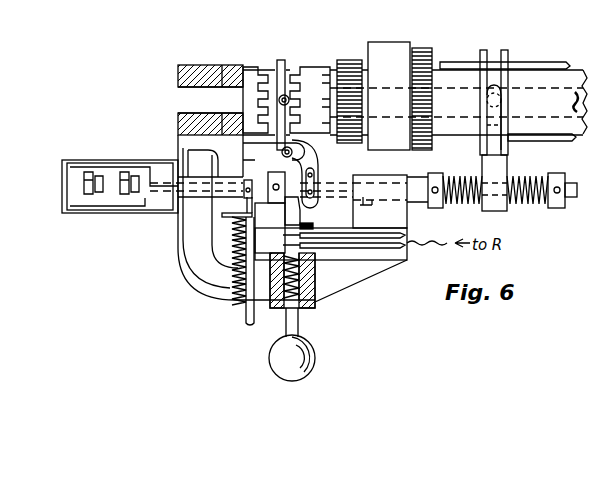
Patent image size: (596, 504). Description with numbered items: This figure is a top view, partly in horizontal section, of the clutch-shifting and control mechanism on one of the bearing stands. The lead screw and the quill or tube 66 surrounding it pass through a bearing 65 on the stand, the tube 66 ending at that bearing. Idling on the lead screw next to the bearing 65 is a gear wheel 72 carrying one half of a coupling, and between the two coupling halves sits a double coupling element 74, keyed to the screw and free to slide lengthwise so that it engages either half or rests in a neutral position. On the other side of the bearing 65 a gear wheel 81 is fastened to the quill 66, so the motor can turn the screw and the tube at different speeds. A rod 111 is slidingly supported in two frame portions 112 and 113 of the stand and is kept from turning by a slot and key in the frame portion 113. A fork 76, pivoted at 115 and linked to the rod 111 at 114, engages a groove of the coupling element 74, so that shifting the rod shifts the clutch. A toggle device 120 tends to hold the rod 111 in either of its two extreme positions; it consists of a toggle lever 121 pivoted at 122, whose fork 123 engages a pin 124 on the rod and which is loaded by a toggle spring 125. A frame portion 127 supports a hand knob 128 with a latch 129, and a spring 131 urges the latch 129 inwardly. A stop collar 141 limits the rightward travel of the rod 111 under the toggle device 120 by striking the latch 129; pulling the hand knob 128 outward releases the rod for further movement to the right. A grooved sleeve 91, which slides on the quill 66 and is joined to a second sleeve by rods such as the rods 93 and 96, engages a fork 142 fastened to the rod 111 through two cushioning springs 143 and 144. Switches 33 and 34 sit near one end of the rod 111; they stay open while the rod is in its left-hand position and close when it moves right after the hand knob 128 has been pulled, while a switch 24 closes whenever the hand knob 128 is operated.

The switch 24 is at (300, 245).
The switch 33 is at (95, 172).
The switch 34 is at (136, 172).
The bearing 65 is at (388, 50).
The quill or tube 66 is at (572, 86).
The gear wheel 72 is at (350, 60).
The double coupling element 74 is at (292, 68).
The fork 76 is at (312, 172).
The gear wheel 81 is at (425, 50).
The grooved sleeve 91 is at (496, 56).
The rod 93 is at (546, 62).
The rod 96 is at (558, 141).
The rod 111 is at (566, 186).
The frame portion 112 is at (186, 200).
The frame portion 113 is at (368, 205).
The link 114 is at (322, 182).
The pivot 115 is at (271, 111).
The toggle device 120 is at (200, 270).
The toggle lever 121 is at (240, 313).
The pivot 122 is at (230, 250).
The fork 123 is at (246, 196).
The pin 124 is at (252, 179).
The toggle spring 125 is at (225, 262).
The frame portion 127 is at (355, 272).
The hand knob 128 is at (312, 350).
The latch 129 is at (310, 200).
The spring 131 is at (316, 298).
The stop collar 141 is at (270, 212).
The fork 142 is at (484, 168).
The cushioning spring 143 is at (466, 205).
The cushioning spring 144 is at (536, 205).